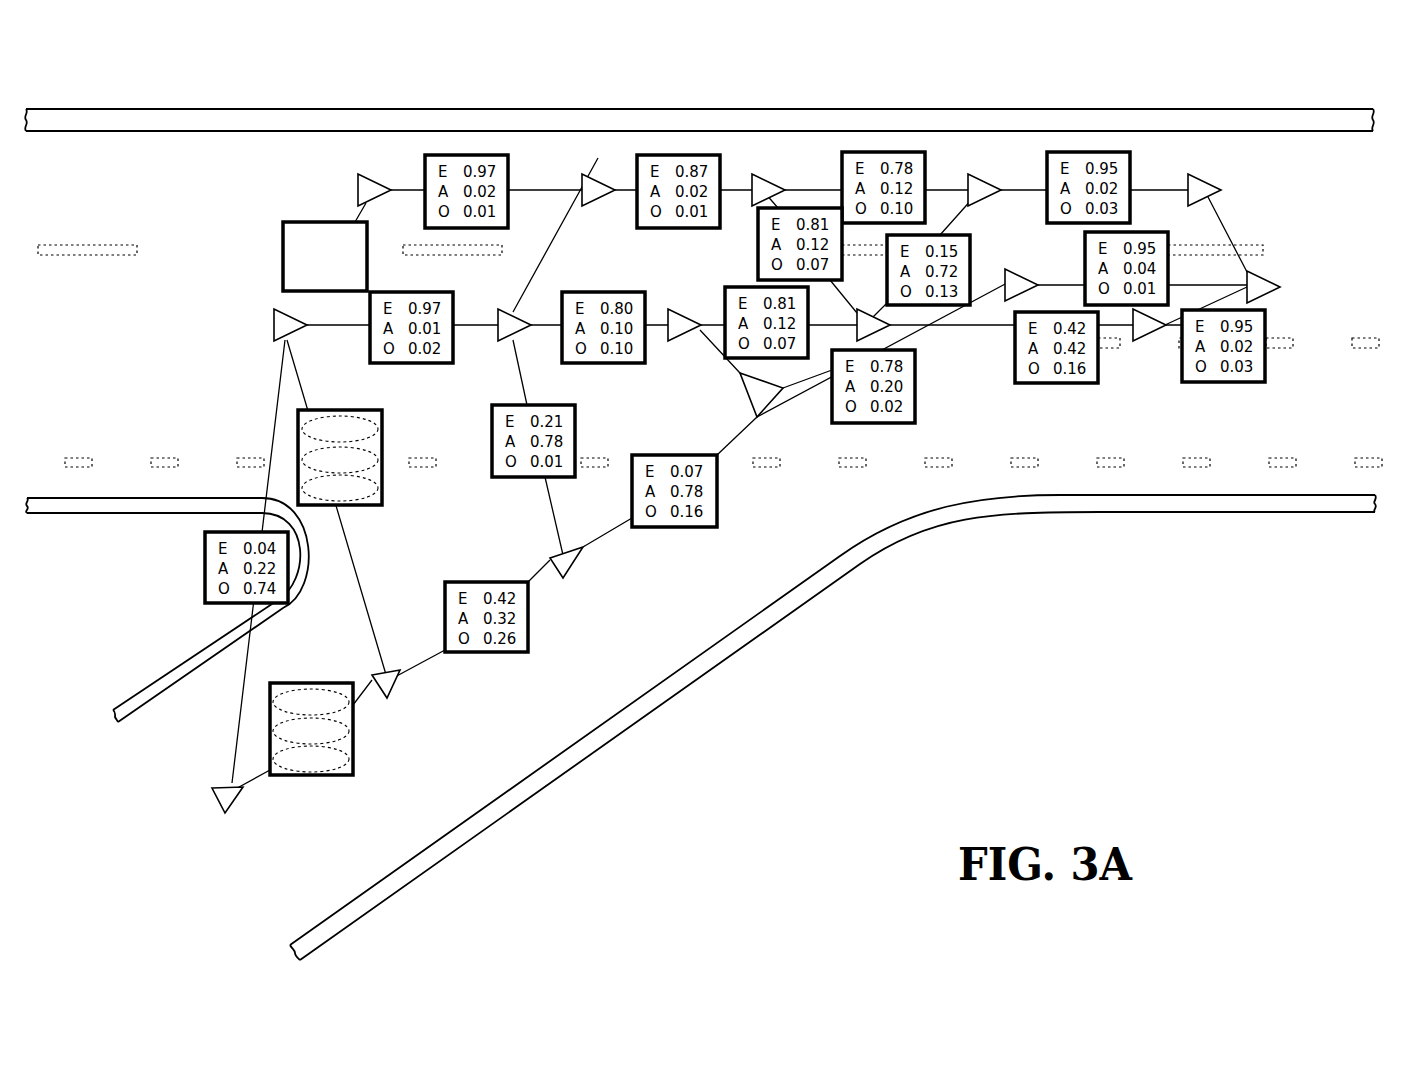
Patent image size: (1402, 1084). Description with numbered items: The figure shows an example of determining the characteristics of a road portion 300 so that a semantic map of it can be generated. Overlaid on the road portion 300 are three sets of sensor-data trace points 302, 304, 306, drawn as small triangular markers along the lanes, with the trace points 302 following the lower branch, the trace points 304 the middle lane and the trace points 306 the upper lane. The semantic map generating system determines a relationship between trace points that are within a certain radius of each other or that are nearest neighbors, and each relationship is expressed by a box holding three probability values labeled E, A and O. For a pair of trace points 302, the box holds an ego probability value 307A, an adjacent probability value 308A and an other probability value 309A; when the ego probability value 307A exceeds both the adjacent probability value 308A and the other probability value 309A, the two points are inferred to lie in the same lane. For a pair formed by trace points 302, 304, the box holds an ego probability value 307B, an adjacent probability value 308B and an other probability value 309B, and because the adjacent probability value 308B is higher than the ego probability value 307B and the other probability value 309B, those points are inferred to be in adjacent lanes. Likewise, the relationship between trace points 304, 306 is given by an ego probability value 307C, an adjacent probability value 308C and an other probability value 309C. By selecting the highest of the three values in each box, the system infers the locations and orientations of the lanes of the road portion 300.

The road portion 300 is at (991, 609).
The trace points 302 is at (573, 565).
The trace points 304 is at (273, 327).
The trace points 306 is at (373, 172).
The ego probability value 307A is at (355, 716).
The adjacent probability value 308A is at (355, 752).
The other probability value 309A is at (347, 780).
The ego probability value 307B is at (297, 408).
The adjacent probability value 308B is at (297, 436).
The other probability value 309B is at (295, 466).
The ego probability value 307C is at (283, 220).
The adjacent probability value 308C is at (283, 242).
The other probability value 309C is at (282, 270).